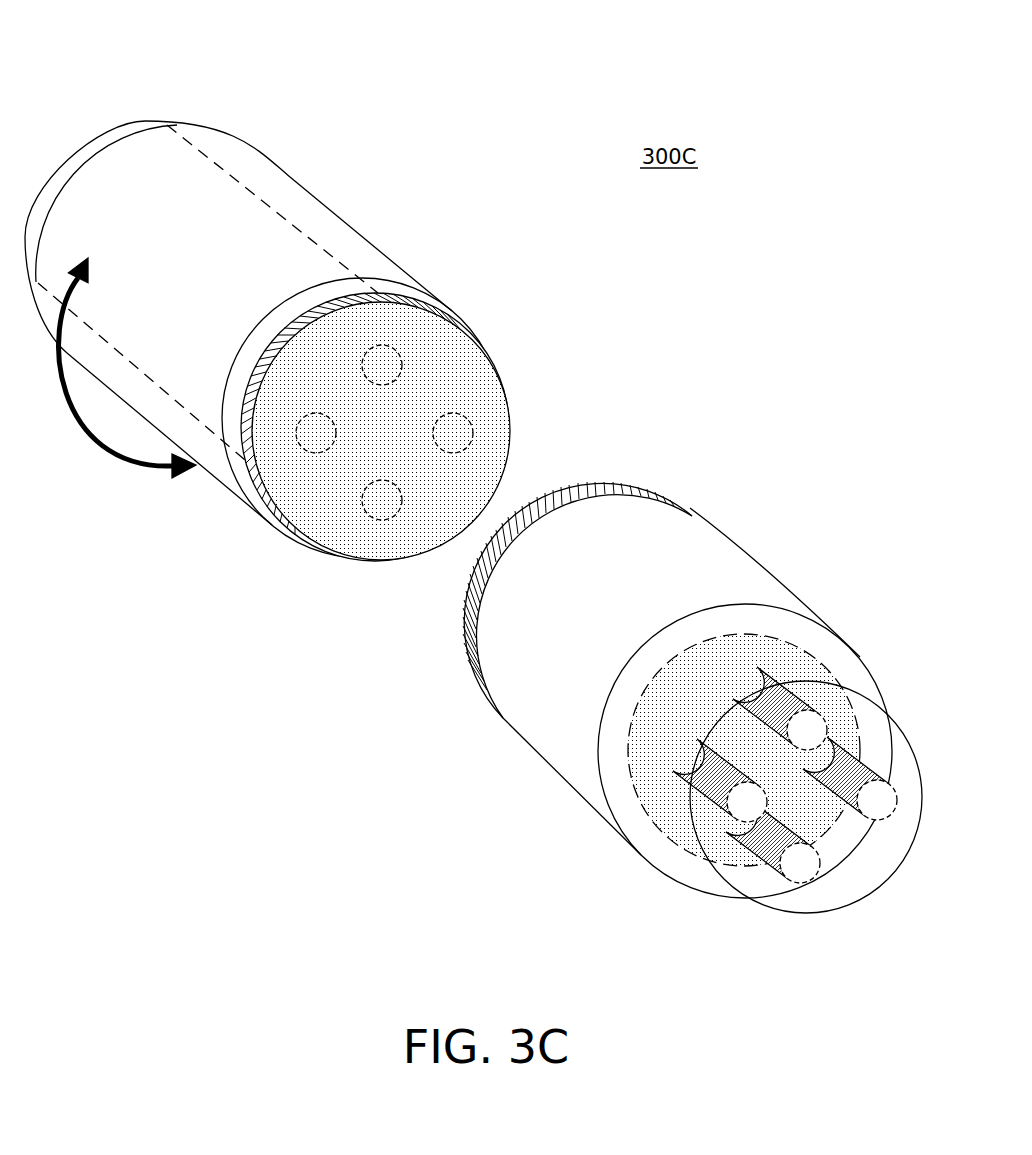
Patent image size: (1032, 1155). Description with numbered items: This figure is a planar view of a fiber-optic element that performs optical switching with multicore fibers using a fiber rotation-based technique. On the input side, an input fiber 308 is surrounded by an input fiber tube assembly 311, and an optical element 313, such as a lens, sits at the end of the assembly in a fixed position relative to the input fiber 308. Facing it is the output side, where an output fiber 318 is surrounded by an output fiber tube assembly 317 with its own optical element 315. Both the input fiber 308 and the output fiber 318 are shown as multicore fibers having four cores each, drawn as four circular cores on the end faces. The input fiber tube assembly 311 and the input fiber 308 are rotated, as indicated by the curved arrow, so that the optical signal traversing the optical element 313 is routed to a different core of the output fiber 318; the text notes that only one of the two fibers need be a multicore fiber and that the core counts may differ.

The input fiber 308 is at (150, 121).
The input fiber tube assembly 311 is at (353, 237).
The optical element 313 is at (463, 330).
The optical element 315 is at (613, 489).
The output fiber tube assembly 317 is at (733, 540).
The output fiber 318 is at (848, 696).